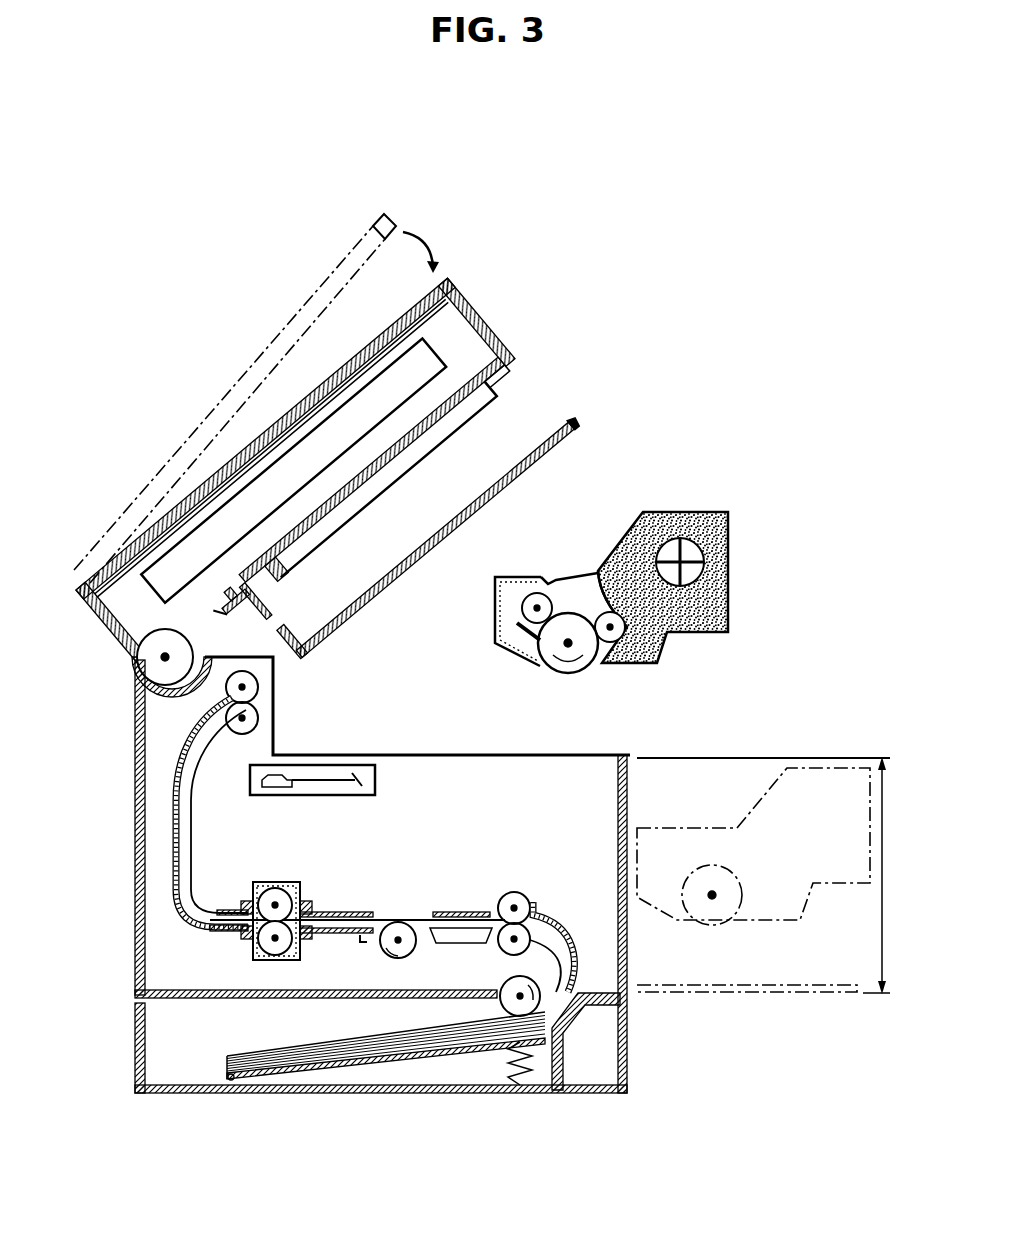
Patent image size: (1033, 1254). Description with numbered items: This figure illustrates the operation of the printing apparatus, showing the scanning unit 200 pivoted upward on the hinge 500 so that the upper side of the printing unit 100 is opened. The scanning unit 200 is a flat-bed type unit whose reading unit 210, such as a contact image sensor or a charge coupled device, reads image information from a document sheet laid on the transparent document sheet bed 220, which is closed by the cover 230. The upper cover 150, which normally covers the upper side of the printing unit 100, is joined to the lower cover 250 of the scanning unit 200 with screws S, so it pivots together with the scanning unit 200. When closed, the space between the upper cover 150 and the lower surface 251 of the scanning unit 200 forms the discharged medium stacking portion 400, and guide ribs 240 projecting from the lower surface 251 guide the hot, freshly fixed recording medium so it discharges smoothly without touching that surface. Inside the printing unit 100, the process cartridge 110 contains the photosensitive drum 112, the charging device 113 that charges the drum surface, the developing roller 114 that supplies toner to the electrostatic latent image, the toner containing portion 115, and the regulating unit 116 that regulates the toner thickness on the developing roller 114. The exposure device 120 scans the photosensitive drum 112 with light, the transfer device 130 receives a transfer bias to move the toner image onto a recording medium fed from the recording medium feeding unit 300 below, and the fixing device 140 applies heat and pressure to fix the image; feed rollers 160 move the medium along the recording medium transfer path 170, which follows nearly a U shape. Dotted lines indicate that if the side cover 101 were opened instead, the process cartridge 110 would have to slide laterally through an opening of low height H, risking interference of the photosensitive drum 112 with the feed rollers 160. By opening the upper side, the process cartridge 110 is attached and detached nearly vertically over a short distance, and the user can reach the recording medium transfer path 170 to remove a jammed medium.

The printing unit 100 is at (518, 875).
The side cover 101 is at (787, 997).
The process cartridge 110 is at (620, 582).
The photosensitive drum 112 is at (568, 613).
The charging device 113 is at (497, 608).
The developing roller 114 is at (598, 570).
The toner containing portion 115 is at (731, 607).
The regulating unit 116 is at (632, 537).
The exposure device 120 is at (265, 795).
The transfer device 130 is at (410, 957).
The fixing device 140 is at (252, 878).
The upper cover 150 is at (575, 428).
The feed rollers 160 is at (498, 948).
The recording medium transfer path 170 is at (340, 934).
The scanning unit 200 is at (482, 312).
The reading unit 210 is at (273, 463).
The document sheet bed 220 is at (337, 373).
The cover 230 is at (360, 307).
The guide ribs 240 is at (387, 480).
The lower cover 250 is at (470, 403).
The lower surface 251 is at (505, 373).
The recording medium feeding unit 300 is at (642, 1058).
The discharged medium stacking portion 400 is at (358, 573).
The hinge 500 is at (160, 657).
The screws S is at (233, 608).
The height H is at (895, 872).